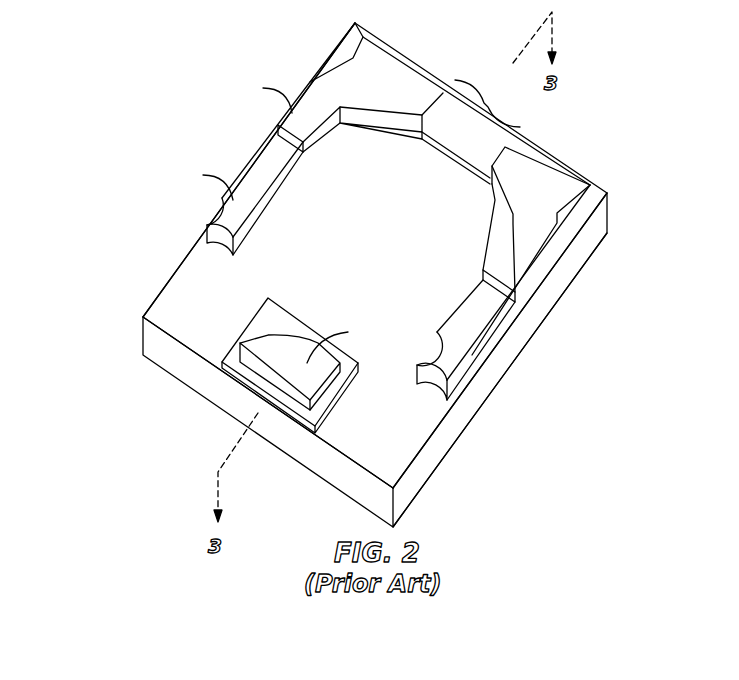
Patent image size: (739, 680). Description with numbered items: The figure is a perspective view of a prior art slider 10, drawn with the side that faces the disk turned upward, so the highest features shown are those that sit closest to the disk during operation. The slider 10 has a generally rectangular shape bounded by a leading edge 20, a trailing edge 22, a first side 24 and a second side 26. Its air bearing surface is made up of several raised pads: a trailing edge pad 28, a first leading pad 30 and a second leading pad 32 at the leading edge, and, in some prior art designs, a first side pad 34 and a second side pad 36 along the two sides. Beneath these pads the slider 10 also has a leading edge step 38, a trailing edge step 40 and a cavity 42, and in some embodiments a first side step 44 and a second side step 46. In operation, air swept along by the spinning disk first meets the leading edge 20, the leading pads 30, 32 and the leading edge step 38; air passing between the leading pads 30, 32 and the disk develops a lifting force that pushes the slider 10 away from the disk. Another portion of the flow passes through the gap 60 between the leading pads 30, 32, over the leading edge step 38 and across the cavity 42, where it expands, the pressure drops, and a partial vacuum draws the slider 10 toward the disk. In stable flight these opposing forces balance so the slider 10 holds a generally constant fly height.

The slider 10 is at (180, 48).
The leading edge 20 is at (432, 68).
The trailing edge 22 is at (172, 362).
The first side 24 is at (172, 272).
The second side 26 is at (423, 468).
The trailing edge pad 28 is at (252, 348).
The first leading pad 30 is at (343, 78).
The second leading pad 32 is at (553, 173).
The first side pad 34 is at (212, 230).
The second side pad 36 is at (440, 370).
The leading edge step 38 is at (445, 138).
The trailing edge step 40 is at (272, 312).
The cavity 42 is at (340, 230).
The first side step 44 is at (262, 163).
The second side step 46 is at (480, 317).
The gap 60 is at (483, 108).